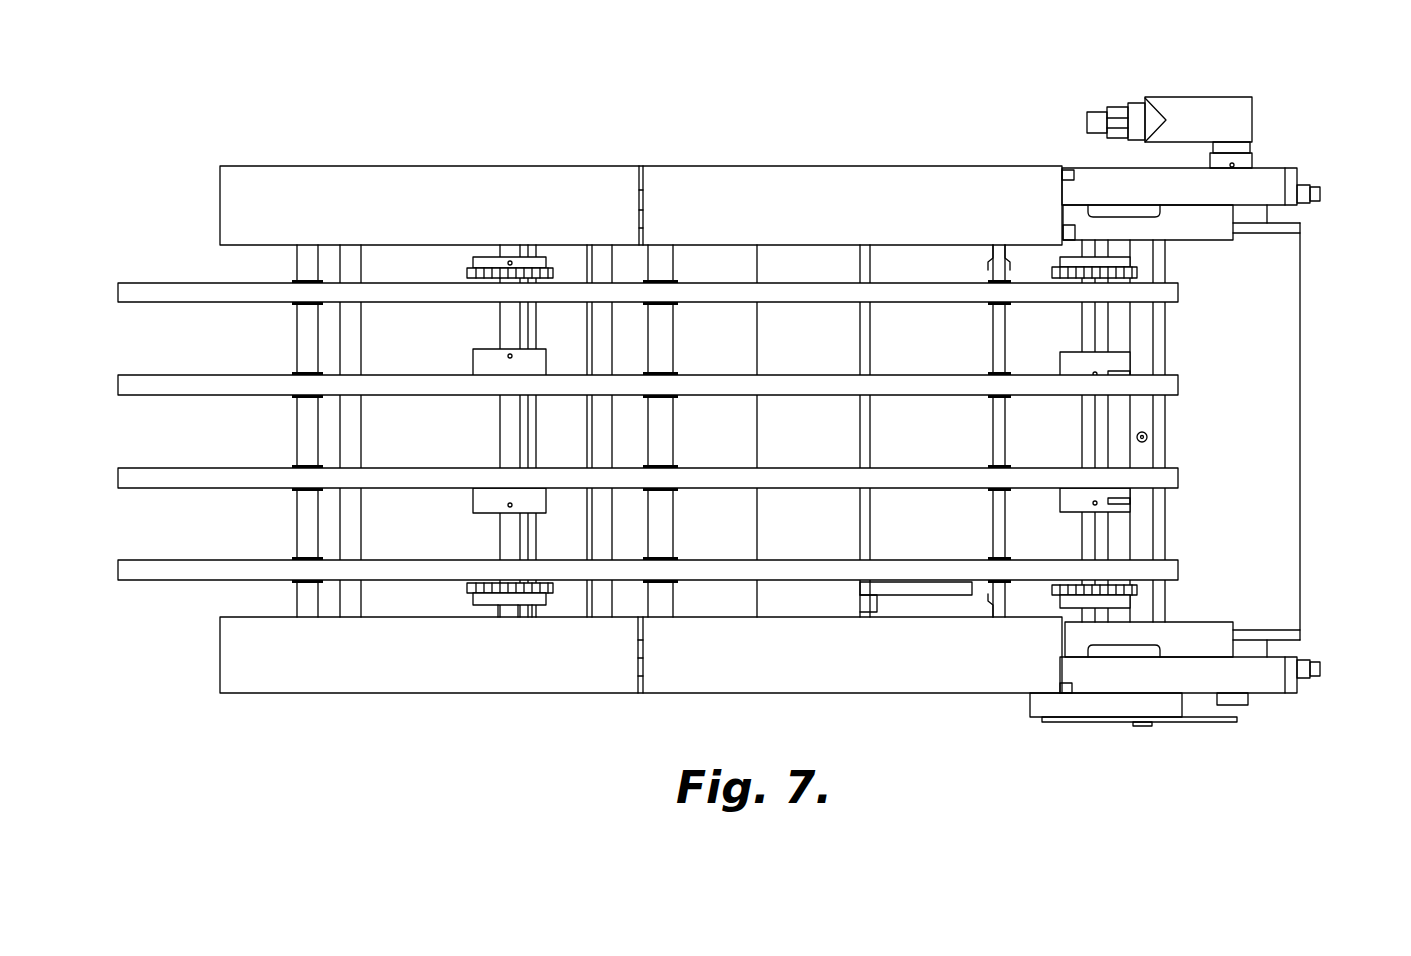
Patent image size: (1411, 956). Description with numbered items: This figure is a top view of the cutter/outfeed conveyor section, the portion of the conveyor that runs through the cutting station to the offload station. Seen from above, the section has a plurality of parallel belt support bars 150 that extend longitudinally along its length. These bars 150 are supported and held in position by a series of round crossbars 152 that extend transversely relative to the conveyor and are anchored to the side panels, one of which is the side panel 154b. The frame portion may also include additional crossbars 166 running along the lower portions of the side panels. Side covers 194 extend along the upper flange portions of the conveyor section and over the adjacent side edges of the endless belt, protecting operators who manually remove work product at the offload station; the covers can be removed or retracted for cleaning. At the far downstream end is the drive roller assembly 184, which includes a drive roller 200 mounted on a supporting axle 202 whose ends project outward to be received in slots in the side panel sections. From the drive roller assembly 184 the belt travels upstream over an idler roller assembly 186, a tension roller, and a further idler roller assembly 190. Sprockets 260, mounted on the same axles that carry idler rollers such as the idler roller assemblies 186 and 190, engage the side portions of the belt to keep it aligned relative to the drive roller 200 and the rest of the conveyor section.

The belt support bars 150 is at (157, 281).
The round crossbars 152 is at (302, 260).
The additional crossbars 166 is at (347, 260).
The idler roller assembly 190 is at (548, 332).
The side covers 194 is at (857, 173).
The sprockets 260 is at (488, 260).
The idler roller assembly 186 is at (1075, 433).
The drive roller 200 is at (1300, 511).
The side panel 154b is at (1268, 172).
The drive roller assembly 184 is at (1270, 698).
The supporting axle 202 is at (1240, 710).